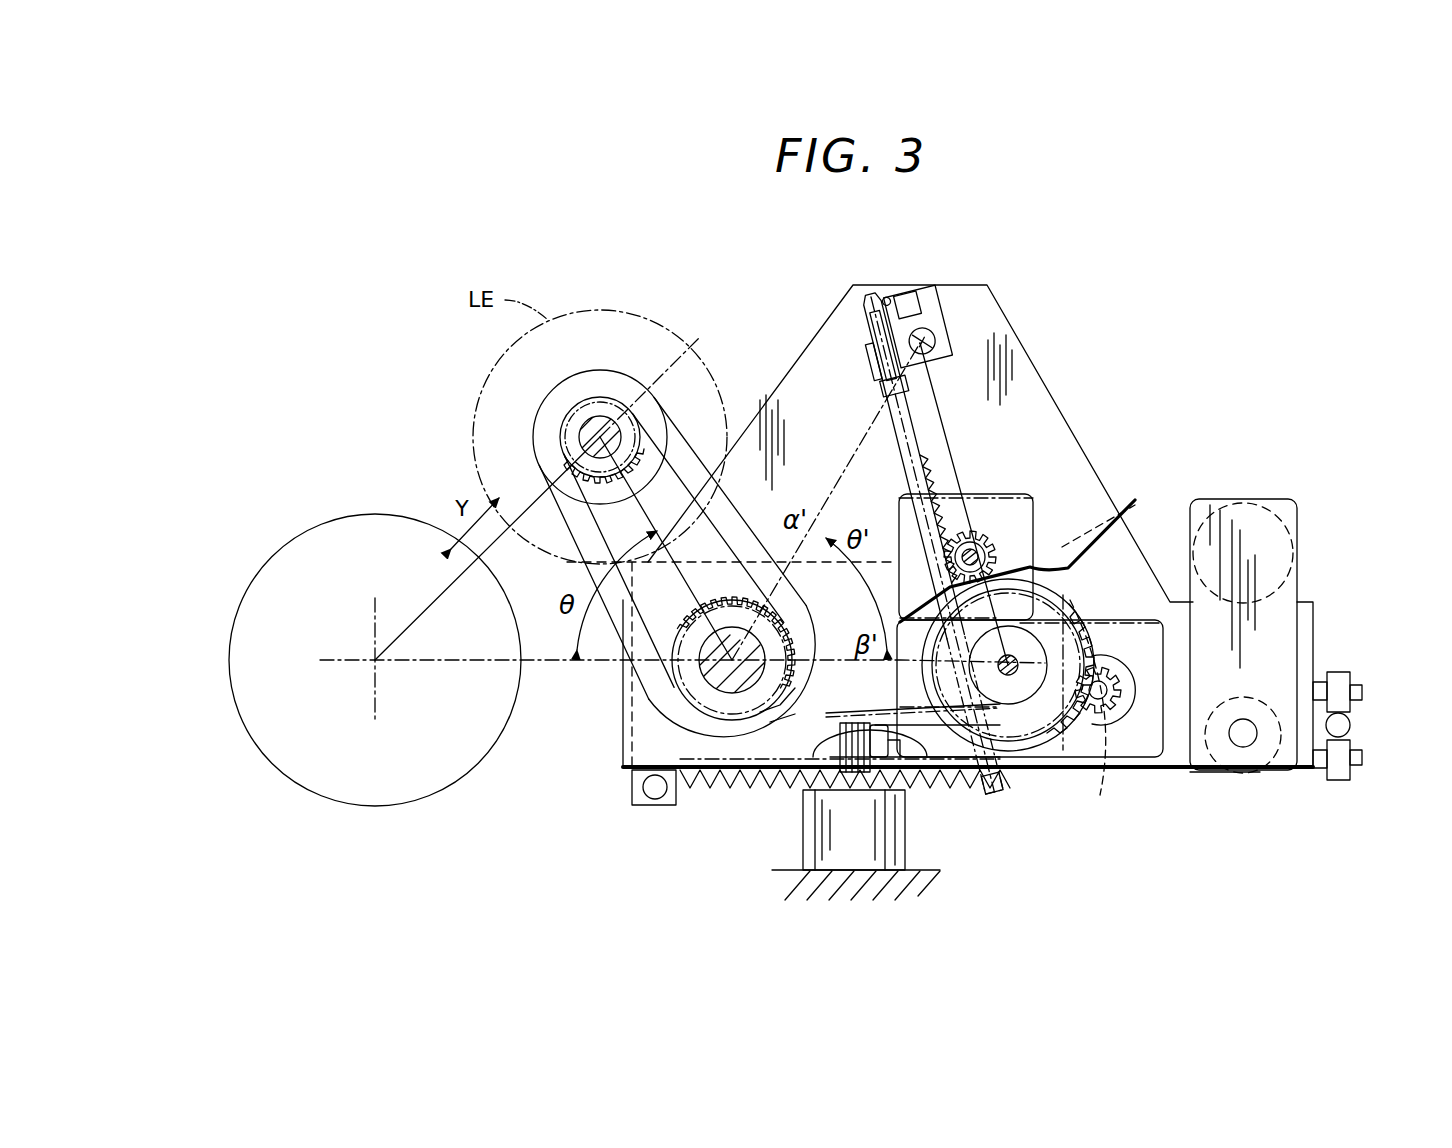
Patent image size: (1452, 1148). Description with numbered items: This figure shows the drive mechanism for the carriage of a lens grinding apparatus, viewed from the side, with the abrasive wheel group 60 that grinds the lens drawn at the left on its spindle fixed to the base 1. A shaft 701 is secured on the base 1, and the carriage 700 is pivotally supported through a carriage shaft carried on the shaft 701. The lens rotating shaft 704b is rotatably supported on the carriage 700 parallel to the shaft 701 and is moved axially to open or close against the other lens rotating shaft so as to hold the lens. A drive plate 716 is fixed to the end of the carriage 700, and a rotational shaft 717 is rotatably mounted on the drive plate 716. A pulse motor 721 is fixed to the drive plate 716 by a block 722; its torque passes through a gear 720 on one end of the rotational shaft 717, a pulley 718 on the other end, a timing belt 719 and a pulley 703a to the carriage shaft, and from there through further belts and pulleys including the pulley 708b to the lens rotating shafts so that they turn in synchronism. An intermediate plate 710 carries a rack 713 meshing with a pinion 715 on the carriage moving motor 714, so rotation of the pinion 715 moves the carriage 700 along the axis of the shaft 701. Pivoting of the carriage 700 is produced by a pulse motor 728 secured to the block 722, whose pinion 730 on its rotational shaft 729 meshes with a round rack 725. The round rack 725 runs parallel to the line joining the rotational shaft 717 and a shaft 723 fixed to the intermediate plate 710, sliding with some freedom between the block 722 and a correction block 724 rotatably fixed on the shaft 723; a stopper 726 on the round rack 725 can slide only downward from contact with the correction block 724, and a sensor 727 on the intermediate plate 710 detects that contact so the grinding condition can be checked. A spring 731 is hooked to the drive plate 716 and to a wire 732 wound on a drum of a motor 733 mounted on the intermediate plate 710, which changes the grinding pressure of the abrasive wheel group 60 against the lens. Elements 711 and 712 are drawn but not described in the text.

The base 1 is at (808, 900).
The abrasive wheel group 60 is at (282, 790).
The carriage 700 is at (640, 372).
The shaft 701 is at (706, 685).
The pulley 703a is at (698, 706).
The lens rotating shaft 704b is at (578, 430).
The pulley 708b is at (566, 452).
The intermediate plate 710 is at (1022, 352).
The adjusting screws 711 is at (1340, 673).
The ball 712 is at (1351, 724).
The rack 713 is at (935, 745).
The carriage moving motor 714 is at (893, 830).
The pinion 715 is at (815, 762).
The drive plate 716 is at (1132, 506).
The rotational shaft 717 is at (1064, 668).
The pulley 718 is at (1098, 738).
The timing belt 719 is at (780, 776).
The gear 720 is at (1065, 750).
The pulse motor 721 is at (1105, 602).
The block 722 is at (1033, 498).
The shaft 723 is at (928, 362).
The correction block 724 is at (940, 352).
The round rack 725 is at (862, 305).
The stopper 726 is at (866, 386).
The sensor 727 is at (884, 298).
The pulse motor 728 is at (976, 530).
The rotational shaft 729 is at (1040, 530).
The pinion 730 is at (1042, 545).
The spring 731 is at (712, 796).
The wire 732 is at (1226, 792).
The motor 733 is at (1298, 512).